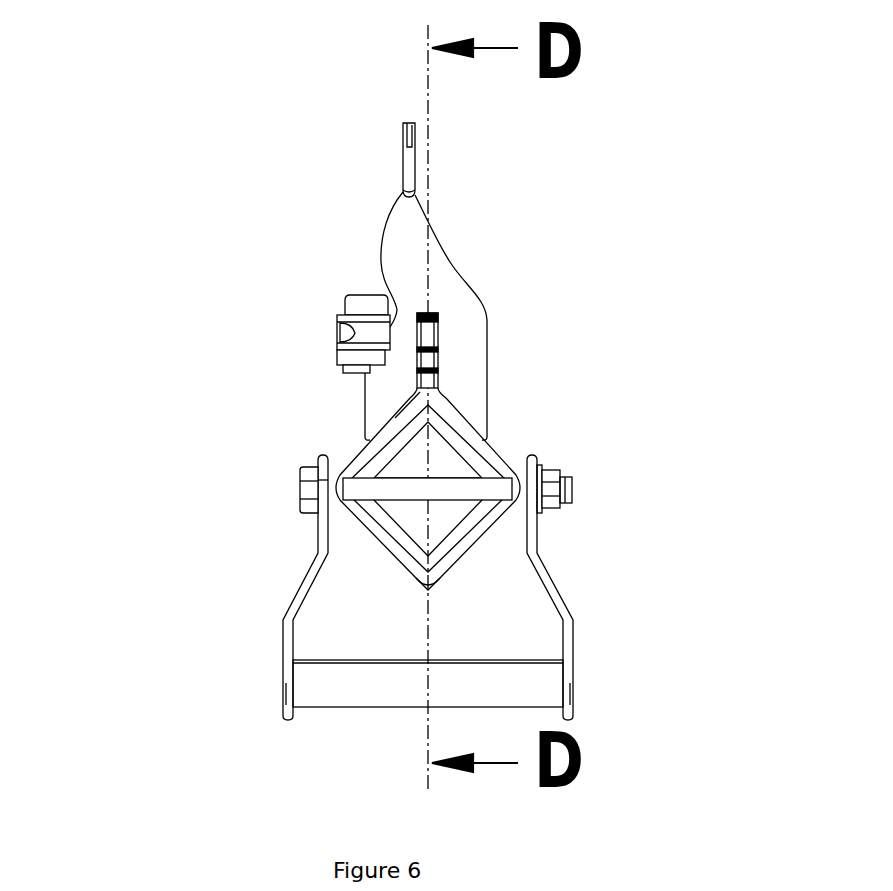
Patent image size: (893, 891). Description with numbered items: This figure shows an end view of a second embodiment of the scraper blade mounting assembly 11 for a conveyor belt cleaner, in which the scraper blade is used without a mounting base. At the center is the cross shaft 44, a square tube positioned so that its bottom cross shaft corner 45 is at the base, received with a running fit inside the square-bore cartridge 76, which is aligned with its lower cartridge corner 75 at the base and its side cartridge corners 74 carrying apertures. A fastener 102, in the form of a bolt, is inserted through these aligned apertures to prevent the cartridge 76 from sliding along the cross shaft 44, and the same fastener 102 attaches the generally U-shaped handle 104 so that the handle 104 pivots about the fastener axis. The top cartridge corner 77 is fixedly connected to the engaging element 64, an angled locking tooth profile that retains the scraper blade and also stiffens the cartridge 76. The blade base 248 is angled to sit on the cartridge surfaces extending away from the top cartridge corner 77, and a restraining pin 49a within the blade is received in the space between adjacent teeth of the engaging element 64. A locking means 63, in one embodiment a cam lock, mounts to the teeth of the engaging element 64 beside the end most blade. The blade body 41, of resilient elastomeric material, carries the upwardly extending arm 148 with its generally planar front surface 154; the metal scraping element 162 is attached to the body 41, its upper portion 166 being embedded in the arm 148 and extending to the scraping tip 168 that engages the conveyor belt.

The scraper blade mounting assembly 11 is at (215, 476).
The body 41 is at (486, 317).
The cross shaft 44 is at (468, 517).
The bottom cross shaft corner 45 is at (427, 555).
The restraining pin 49a is at (428, 357).
The locking means 63 is at (347, 330).
The engaging element 64 is at (432, 342).
The side cartridge corners 74 is at (330, 490).
The lower cartridge corner 75 is at (425, 587).
The cartridge 76 is at (527, 497).
The top cartridge corner 77 is at (443, 393).
The fastener 102 is at (303, 492).
The handle 104 is at (283, 632).
The arm 148 is at (397, 253).
The front surface 154 is at (452, 265).
The scraping element 162 is at (428, 185).
The upper portion 166 is at (408, 168).
The scraping tip 168 is at (408, 132).
The blade base 248 is at (405, 412).